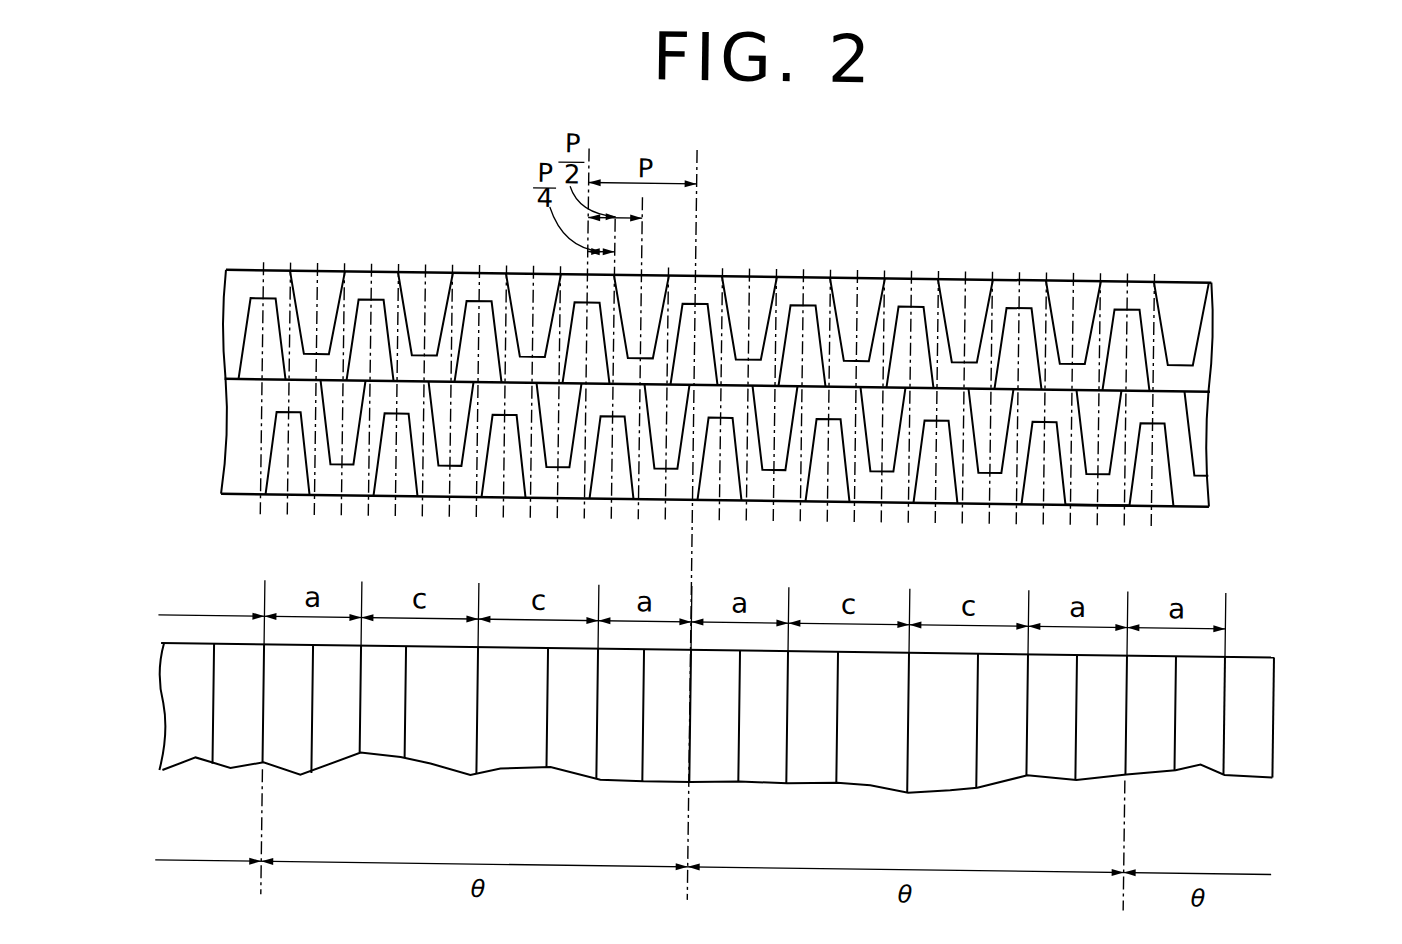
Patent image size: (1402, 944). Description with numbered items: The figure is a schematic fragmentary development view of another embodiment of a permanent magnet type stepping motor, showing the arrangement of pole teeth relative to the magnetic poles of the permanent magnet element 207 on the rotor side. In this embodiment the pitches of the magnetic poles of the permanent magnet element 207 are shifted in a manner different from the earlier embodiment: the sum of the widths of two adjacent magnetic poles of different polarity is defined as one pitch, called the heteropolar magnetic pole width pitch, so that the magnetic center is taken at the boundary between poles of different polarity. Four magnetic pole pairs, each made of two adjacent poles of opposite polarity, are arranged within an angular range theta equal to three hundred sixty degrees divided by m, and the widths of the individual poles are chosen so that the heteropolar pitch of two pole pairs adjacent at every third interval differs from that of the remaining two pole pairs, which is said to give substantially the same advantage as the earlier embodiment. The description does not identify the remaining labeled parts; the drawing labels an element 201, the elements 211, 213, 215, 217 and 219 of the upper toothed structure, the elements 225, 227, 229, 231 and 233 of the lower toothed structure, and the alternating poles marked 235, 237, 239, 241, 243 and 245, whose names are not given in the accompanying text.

The permanent magnet 201 is at (1262, 633).
The permanent magnet element 207 is at (1278, 717).
The first armature core 211 is at (1210, 366).
The upper core portion 213 is at (1079, 278).
The first teeth 215 is at (298, 292).
The lower core portion 217 is at (1146, 357).
The second teeth 219 is at (245, 328).
The second armature core 225 is at (1212, 441).
The slot 227 is at (1109, 483).
The third teeth 229 is at (336, 457).
The core body 231 is at (1171, 474).
The fourth teeth 233 is at (274, 489).
The S magnetic pole 235 is at (296, 763).
The S magnetic pole (narrow) 237 is at (379, 750).
The S magnetic pole (wide) 239 is at (511, 768).
The N magnetic pole 241 is at (234, 761).
The N magnetic pole (wide) 243 is at (446, 761).
The N magnetic pole (narrow) 245 is at (572, 770).